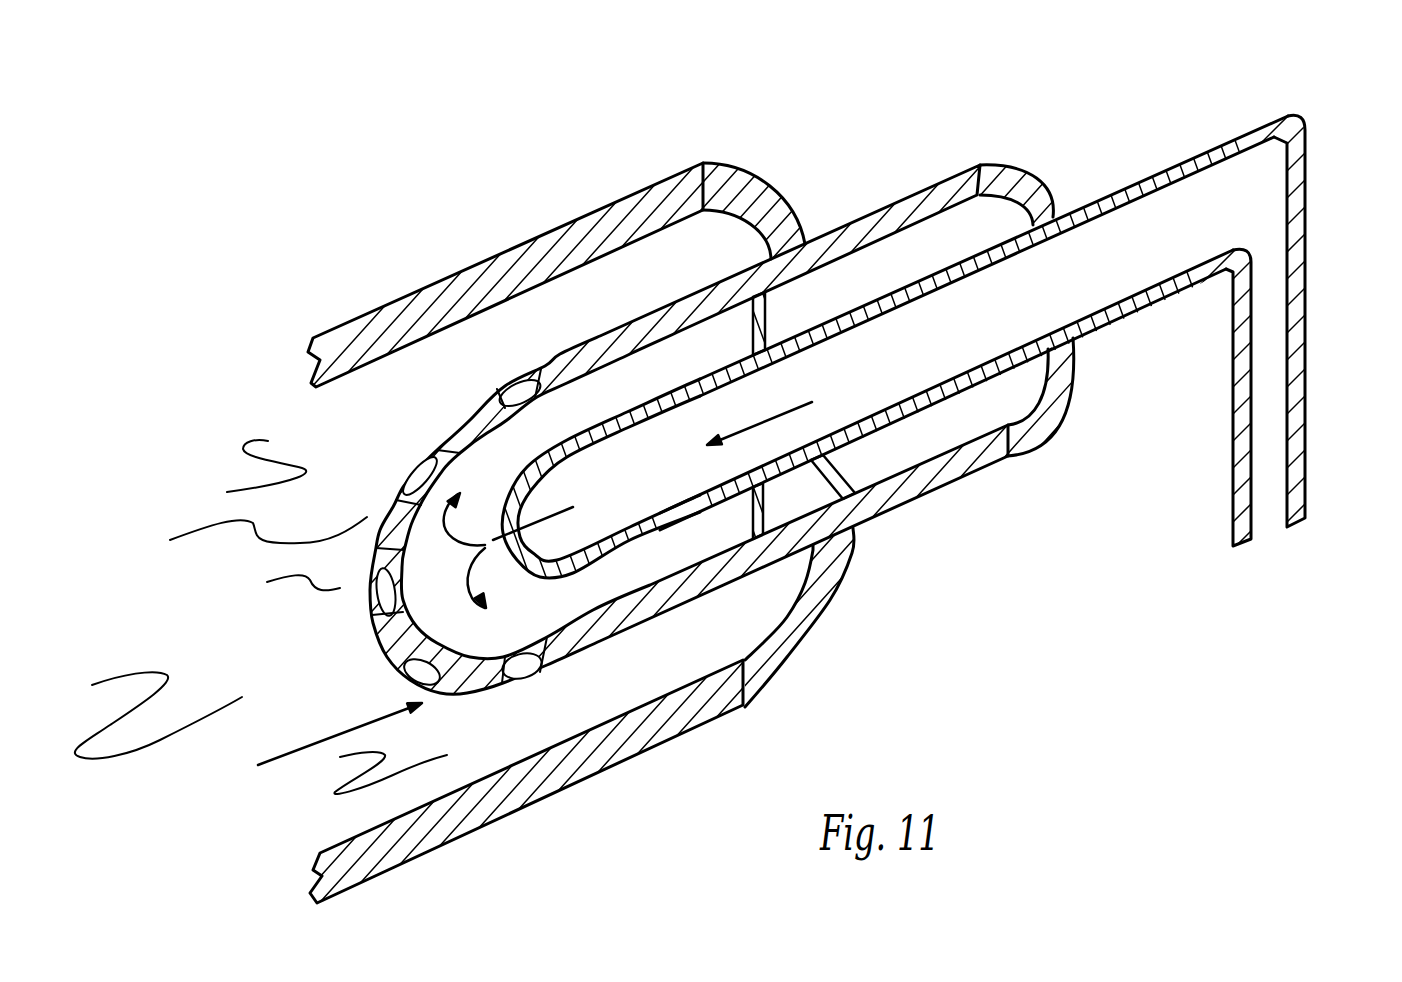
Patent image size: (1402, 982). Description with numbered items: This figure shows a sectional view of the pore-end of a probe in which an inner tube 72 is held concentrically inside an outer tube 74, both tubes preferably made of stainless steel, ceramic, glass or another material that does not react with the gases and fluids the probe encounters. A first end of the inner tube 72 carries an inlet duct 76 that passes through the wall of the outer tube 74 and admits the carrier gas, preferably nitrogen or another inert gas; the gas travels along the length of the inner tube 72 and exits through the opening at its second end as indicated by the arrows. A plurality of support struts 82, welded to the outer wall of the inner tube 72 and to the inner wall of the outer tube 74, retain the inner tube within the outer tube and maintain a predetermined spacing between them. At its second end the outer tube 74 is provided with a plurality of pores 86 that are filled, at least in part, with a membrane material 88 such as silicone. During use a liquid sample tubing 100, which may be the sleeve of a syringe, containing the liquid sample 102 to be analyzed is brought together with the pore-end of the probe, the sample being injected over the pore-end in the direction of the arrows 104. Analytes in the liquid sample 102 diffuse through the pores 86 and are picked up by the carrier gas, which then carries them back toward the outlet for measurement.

The liquid sample tubing 100 is at (477, 267).
The inner tube 72 is at (701, 491).
The outer tube 74 is at (960, 173).
The inlet duct 76 is at (1305, 373).
The support struts 82 is at (833, 465).
The pores 86 is at (493, 687).
The membrane material 88 is at (525, 672).
The liquid sample 102 is at (247, 615).
The arrows 104 is at (338, 735).